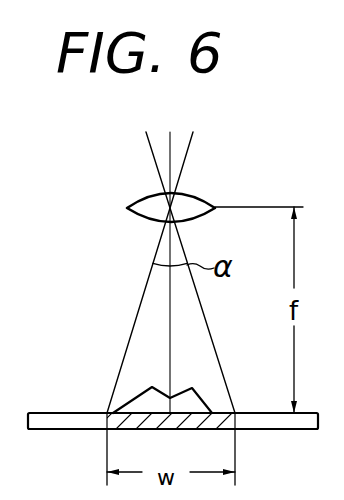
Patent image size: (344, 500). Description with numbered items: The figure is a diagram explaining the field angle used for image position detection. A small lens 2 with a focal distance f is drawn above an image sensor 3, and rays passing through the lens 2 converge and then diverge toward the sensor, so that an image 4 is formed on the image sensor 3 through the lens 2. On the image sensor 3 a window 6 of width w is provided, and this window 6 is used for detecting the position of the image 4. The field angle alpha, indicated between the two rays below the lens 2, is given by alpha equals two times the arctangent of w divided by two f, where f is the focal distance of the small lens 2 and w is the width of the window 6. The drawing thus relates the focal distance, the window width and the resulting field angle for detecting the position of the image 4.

The small lens 2 is at (127, 208).
The image sensor 3 is at (37, 413).
The image 4 is at (138, 397).
The window 6 is at (109, 437).